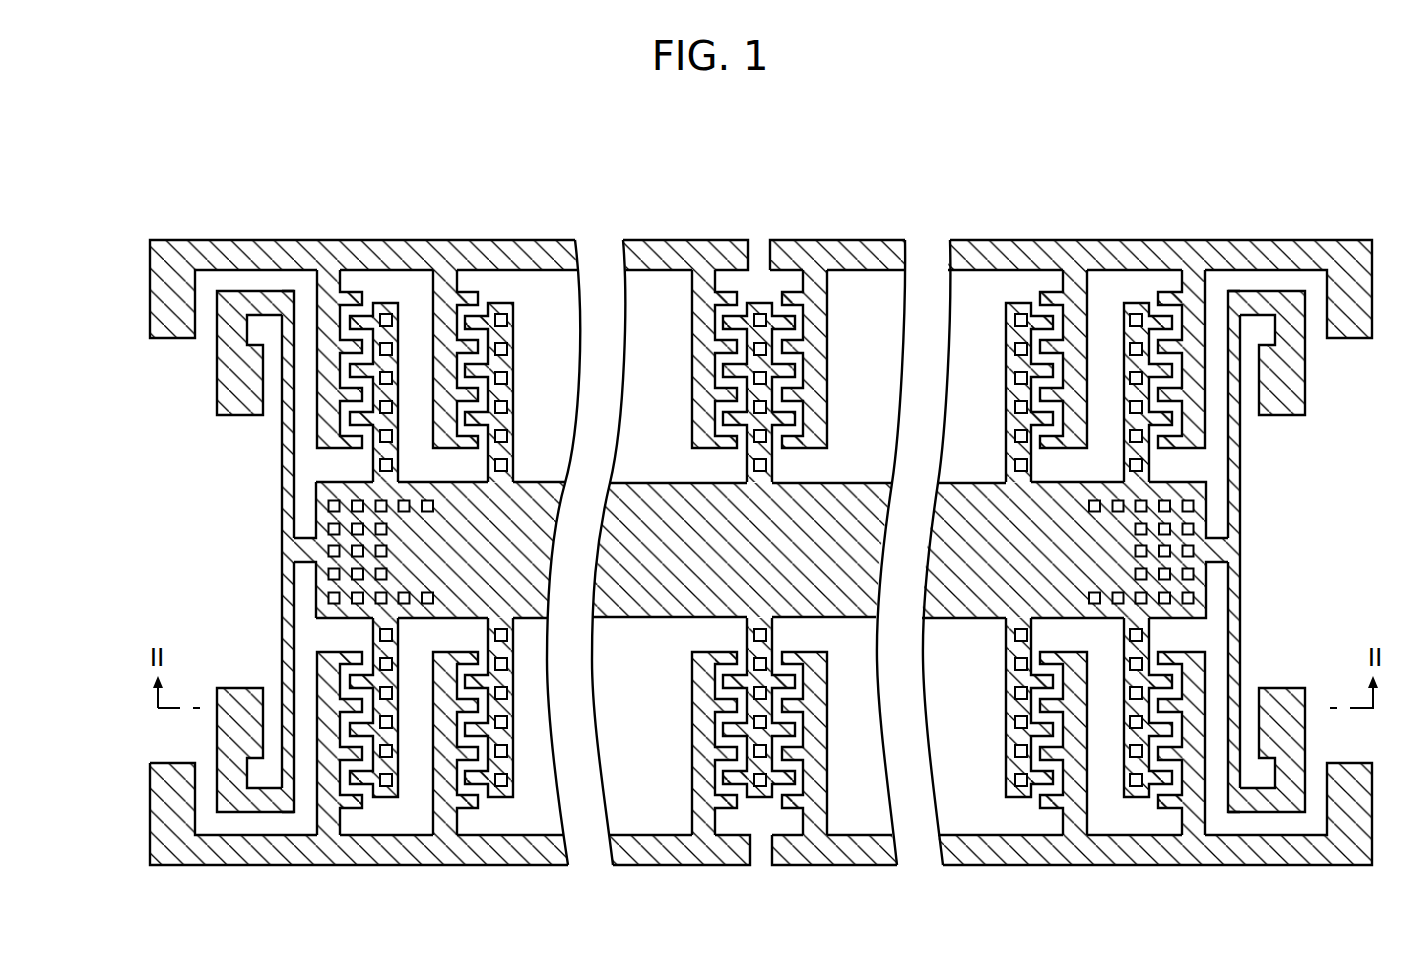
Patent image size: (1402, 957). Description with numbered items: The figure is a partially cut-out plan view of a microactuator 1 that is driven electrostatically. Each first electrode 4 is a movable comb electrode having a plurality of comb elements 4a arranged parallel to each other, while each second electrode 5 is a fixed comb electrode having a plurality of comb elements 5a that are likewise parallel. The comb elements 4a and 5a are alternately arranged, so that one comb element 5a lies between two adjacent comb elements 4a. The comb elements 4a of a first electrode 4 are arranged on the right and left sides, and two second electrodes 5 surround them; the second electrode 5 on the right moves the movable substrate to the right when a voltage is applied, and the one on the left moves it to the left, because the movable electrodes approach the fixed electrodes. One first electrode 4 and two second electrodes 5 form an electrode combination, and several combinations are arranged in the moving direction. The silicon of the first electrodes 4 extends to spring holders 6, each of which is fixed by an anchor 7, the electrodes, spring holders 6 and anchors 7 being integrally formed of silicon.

The microactuator 1 is at (827, 205).
The first electrode 4 is at (512, 362).
The comb elements 4a is at (472, 366).
The second electrode 5 is at (323, 360).
The comb elements 5a is at (353, 345).
The spring holder 6 is at (283, 540).
The anchor 7 is at (228, 400).